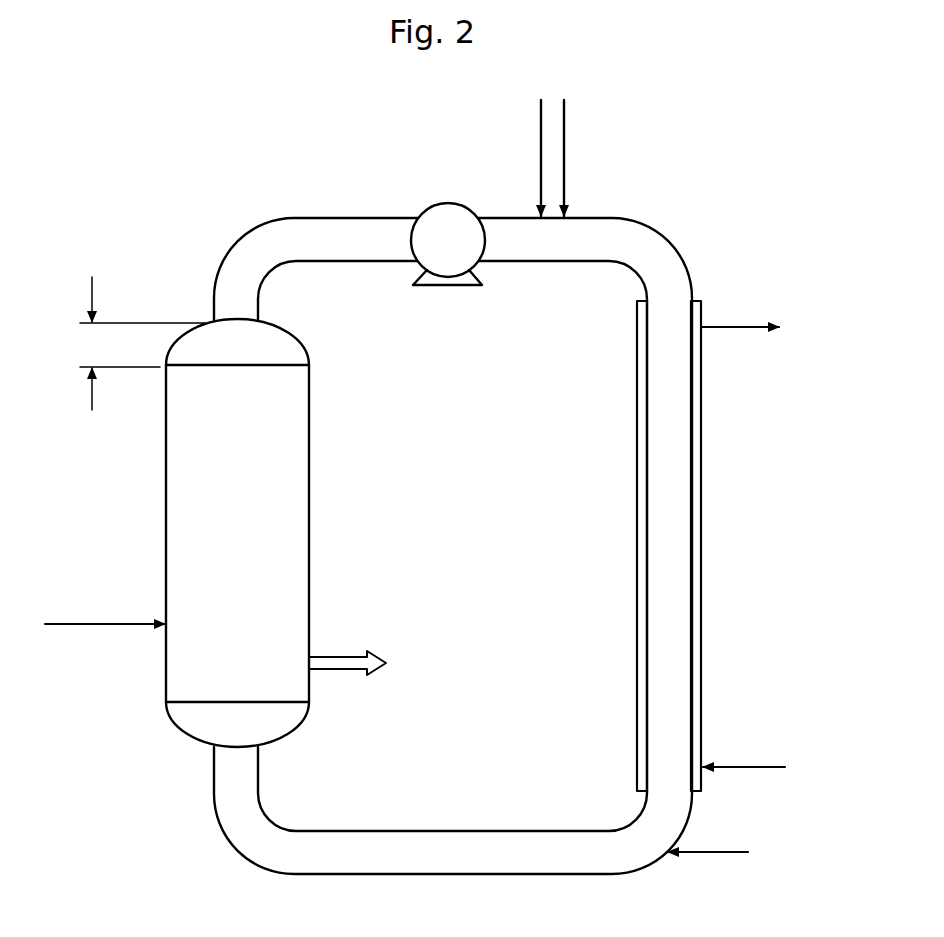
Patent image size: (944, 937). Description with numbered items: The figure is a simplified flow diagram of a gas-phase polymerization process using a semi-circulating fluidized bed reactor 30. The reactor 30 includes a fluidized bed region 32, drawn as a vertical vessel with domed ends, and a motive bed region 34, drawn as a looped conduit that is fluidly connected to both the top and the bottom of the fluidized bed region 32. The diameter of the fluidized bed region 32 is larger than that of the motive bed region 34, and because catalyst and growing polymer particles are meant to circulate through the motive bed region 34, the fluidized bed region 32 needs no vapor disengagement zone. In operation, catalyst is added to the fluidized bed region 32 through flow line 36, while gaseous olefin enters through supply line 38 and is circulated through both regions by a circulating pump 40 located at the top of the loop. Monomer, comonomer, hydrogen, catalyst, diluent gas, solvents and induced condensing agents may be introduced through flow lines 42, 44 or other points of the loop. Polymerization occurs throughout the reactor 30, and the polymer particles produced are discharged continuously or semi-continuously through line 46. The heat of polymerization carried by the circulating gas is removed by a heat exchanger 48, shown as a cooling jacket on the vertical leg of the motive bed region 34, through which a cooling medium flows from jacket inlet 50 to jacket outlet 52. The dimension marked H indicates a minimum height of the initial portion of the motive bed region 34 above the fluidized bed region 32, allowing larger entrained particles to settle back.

The semi-circulating fluidized bed reactor 30 is at (244, 171).
The fluidized bed region 32 is at (245, 532).
The motive bed region 34 is at (382, 232).
The flow line 36 is at (100, 625).
The supply line 38 is at (710, 852).
The circulating pump 40 is at (455, 287).
The flow line 42 is at (539, 135).
The flow line 44 is at (567, 123).
The discharge line 46 is at (347, 670).
The heat exchanger 48 is at (701, 440).
The jacket inlet 50 is at (740, 767).
The jacket outlet 52 is at (737, 325).